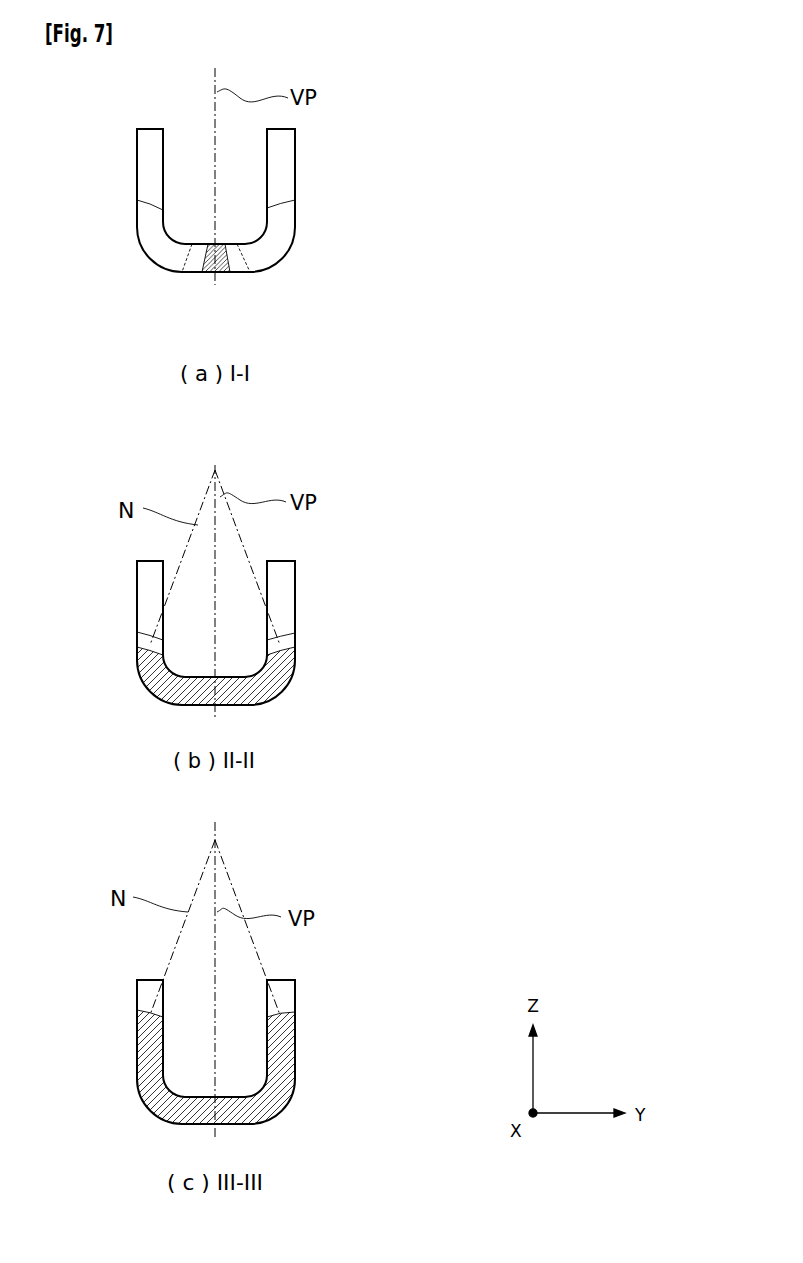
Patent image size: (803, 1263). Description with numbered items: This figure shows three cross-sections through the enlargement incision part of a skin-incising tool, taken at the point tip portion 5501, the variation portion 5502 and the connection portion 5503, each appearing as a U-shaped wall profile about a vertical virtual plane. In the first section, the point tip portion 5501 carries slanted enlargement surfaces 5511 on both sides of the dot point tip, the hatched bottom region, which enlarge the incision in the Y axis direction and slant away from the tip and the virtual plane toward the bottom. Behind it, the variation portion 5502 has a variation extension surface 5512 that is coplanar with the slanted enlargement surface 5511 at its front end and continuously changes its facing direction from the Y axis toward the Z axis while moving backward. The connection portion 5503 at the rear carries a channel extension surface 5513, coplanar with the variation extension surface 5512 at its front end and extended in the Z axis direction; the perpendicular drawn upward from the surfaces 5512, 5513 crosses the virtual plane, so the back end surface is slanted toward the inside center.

The point tip portion 5501 is at (250, 283).
The variation portion 5502 is at (187, 288).
The connection portion 5503 is at (123, 130).
The slanted enlargement surface 5511 is at (232, 255).
The variation extension surface 5512 is at (275, 245).
The channel extension surface 5513 is at (282, 147).